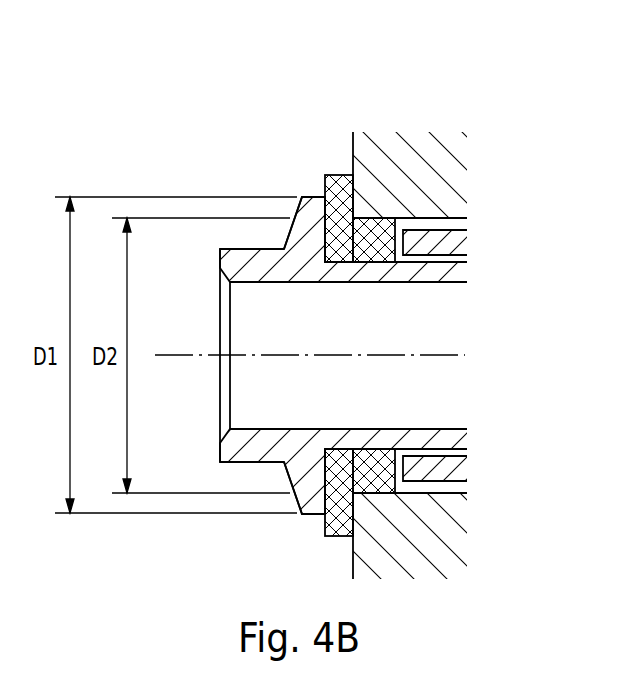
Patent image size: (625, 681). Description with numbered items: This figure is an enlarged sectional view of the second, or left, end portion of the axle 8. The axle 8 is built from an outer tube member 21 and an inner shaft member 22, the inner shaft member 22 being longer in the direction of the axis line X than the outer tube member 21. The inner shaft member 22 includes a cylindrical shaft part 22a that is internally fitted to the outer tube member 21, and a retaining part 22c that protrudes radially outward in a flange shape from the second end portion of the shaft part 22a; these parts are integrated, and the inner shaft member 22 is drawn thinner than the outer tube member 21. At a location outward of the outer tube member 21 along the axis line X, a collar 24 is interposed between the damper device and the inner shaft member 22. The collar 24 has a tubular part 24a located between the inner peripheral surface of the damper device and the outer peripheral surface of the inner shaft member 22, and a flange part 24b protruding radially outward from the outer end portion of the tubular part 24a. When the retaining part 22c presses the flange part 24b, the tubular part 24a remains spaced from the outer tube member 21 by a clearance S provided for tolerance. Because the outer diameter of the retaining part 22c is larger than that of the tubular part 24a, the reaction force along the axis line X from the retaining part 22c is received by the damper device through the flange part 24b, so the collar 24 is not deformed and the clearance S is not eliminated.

The axle 8 is at (392, 288).
The outer tube member 21 is at (456, 243).
The inner shaft member 22 is at (382, 288).
The shaft part 22a is at (430, 282).
The retaining part 22c is at (303, 196).
The collar 24 is at (357, 275).
The tubular part 24a is at (380, 217).
The flange part 24b is at (339, 176).
The clearance S is at (405, 223).
The axis line X is at (455, 355).